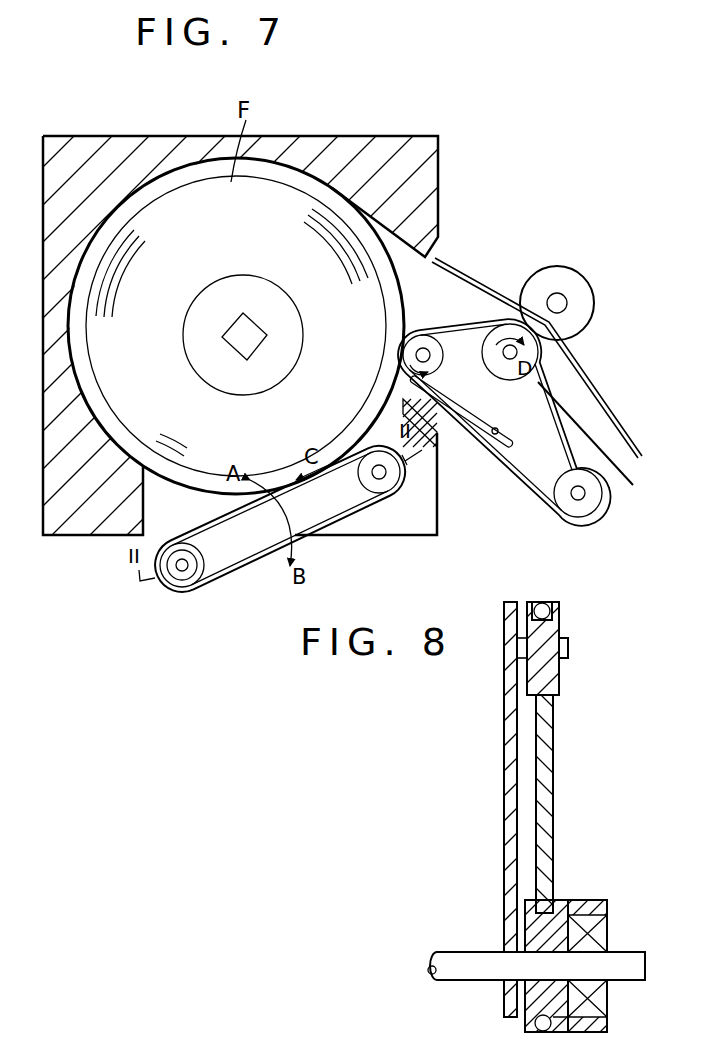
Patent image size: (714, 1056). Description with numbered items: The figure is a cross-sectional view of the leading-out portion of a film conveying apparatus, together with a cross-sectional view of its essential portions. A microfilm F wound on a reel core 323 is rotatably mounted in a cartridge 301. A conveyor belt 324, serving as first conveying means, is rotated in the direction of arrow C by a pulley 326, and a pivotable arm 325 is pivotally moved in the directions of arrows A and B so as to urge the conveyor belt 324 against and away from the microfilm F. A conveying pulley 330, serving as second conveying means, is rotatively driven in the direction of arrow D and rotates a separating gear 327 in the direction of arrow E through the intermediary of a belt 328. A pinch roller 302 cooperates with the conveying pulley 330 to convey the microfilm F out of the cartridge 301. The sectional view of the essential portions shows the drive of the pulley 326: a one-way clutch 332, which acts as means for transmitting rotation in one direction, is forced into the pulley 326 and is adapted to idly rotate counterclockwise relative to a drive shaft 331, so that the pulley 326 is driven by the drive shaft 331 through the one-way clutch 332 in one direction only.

In FIG. 7, the cartridge 301 is at (160, 113).
In FIG. 7, the pinch roller 302 is at (579, 284).
In FIG. 7, the reel core 323 is at (248, 293).
In FIG. 7, the conveyor belt 324 is at (349, 514).
In FIG. 8, the conveyor belt 324 is at (546, 800).
In FIG. 7, the pivotable arm 325 is at (257, 542).
In FIG. 8, the pivotable arm 325 is at (508, 792).
In FIG. 7, the pulley 326 is at (203, 582).
In FIG. 8, the pulley 326 is at (571, 900).
In FIG. 7, the separating gear 327 is at (423, 337).
In FIG. 7, the belt 328 is at (472, 323).
In FIG. 7, the conveying pulley 330 is at (535, 347).
In FIG. 7, the drive shaft 331 is at (182, 572).
In FIG. 8, the drive shaft 331 is at (457, 976).
In FIG. 7, the one-way clutch 332 is at (172, 578).
In FIG. 8, the one-way clutch 332 is at (608, 935).